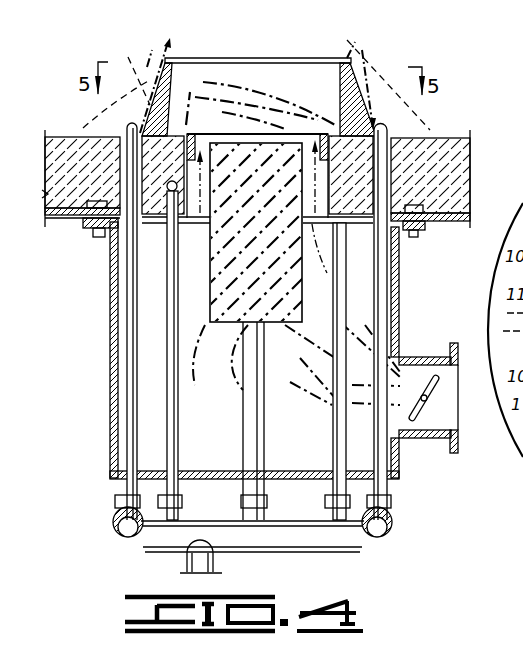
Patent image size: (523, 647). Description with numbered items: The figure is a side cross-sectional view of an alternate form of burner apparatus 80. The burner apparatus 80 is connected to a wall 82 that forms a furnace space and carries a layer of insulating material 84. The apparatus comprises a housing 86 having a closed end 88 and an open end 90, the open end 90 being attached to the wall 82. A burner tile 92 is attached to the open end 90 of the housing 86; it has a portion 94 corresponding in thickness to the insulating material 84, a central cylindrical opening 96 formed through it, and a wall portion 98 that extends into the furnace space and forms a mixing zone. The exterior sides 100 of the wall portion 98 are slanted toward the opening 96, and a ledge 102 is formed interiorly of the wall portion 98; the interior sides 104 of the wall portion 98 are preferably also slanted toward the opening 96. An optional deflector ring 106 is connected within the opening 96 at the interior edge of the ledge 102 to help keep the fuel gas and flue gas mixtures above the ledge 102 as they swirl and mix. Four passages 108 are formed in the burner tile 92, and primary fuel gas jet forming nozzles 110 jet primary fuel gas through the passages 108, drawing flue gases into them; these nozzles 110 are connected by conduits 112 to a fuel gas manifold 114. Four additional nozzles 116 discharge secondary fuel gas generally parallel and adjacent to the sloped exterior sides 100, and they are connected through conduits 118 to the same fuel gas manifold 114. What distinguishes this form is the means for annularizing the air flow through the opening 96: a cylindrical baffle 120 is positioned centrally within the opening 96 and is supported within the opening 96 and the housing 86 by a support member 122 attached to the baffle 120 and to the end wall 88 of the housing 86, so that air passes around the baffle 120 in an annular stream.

The burner apparatus 80 is at (308, 52).
The wall 82 is at (442, 223).
The insulating material 84 is at (470, 143).
The housing 86 is at (112, 325).
The closed end 88 is at (217, 477).
The open end 90 is at (200, 223).
The burner tile 92 is at (373, 130).
The portion 94 is at (361, 260).
The central cylindrical opening 96 is at (317, 192).
The wall portion 98 is at (173, 58).
The exterior sides 100 is at (353, 80).
The ledge 102 is at (338, 129).
The diffuser top plate 104 is at (176, 60).
The deflector ring 106 is at (188, 134).
The passages 108 is at (116, 77).
The primary fuel gas jet forming nozzles 110 is at (135, 232).
The conduits 112 is at (173, 392).
The fuel gas manifold 114 is at (294, 535).
The additional nozzles 116 is at (130, 126).
The conduits 118 is at (127, 431).
The cylindrical baffle 120 is at (217, 268).
The support member 122 is at (247, 414).